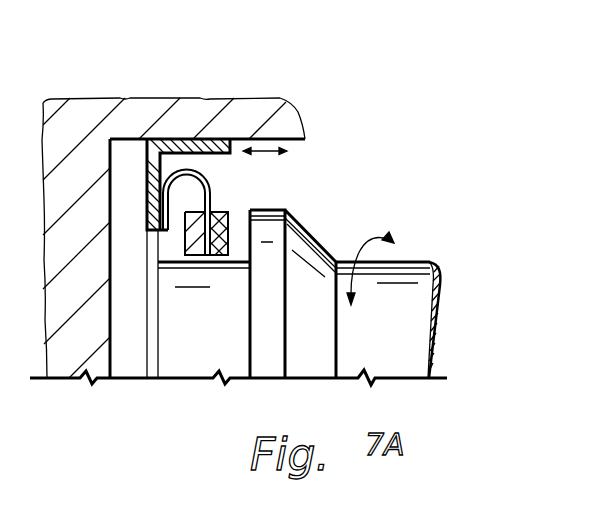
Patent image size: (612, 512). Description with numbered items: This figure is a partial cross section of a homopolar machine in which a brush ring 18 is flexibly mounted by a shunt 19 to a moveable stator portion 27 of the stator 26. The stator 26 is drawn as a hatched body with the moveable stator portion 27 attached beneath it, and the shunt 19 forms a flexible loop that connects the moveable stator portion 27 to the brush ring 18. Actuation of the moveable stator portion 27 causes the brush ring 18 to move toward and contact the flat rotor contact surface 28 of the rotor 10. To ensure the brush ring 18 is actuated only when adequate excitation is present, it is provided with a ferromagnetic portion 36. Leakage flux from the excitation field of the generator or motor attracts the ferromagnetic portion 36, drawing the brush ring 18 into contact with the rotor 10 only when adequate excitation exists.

The rotor 10 is at (405, 272).
The brush ring 18 is at (221, 212).
The shunt 19 is at (200, 173).
The stator 26 is at (277, 116).
The moveable stator portion 27 is at (184, 139).
The flat rotor contact surface 28 is at (258, 243).
The ferromagnetic portion 36 is at (190, 236).